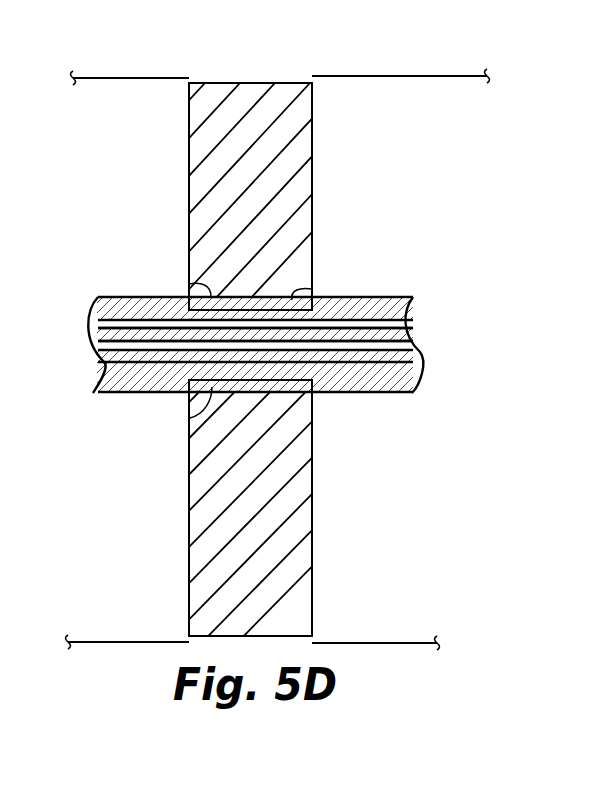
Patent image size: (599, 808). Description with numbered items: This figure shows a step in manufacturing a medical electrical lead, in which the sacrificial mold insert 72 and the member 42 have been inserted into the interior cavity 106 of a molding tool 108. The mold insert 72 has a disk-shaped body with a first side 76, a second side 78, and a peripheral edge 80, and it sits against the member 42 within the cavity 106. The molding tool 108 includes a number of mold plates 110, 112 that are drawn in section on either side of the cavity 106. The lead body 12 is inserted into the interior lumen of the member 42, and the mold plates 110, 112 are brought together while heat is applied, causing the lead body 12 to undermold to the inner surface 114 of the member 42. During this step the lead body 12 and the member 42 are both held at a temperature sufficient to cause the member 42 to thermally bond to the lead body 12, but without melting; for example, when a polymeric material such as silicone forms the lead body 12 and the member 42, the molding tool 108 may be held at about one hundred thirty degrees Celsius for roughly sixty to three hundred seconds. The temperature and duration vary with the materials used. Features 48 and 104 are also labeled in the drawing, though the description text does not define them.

The lead body 12 is at (371, 298).
The member 42 is at (312, 289).
The intermediate layer 48 is at (409, 327).
The sacrificial mold insert 72 is at (360, 115).
The first side 76 is at (189, 176).
The second side 78 is at (312, 197).
The peripheral edge 80 is at (285, 83).
The lower bond interface 104 is at (190, 418).
The interior cavity 106 is at (238, 83).
The molding tool 108 is at (371, 546).
The mold plate 110 is at (115, 624).
The mold plate 112 is at (397, 609).
The inner surface 114 is at (189, 284).